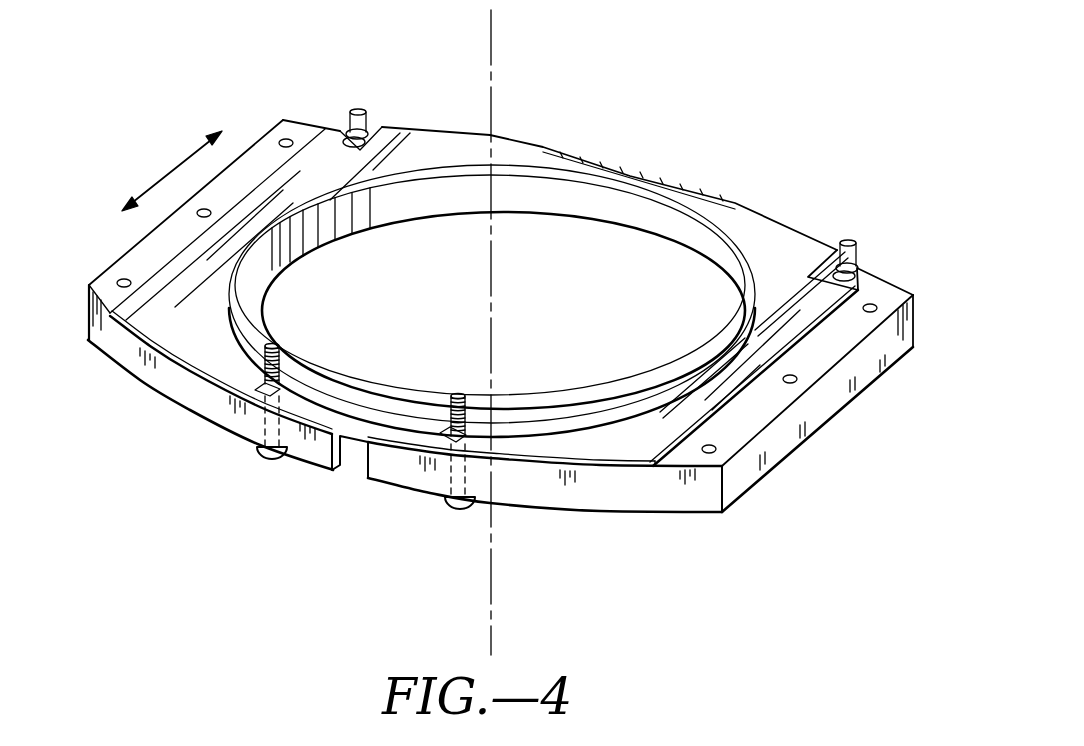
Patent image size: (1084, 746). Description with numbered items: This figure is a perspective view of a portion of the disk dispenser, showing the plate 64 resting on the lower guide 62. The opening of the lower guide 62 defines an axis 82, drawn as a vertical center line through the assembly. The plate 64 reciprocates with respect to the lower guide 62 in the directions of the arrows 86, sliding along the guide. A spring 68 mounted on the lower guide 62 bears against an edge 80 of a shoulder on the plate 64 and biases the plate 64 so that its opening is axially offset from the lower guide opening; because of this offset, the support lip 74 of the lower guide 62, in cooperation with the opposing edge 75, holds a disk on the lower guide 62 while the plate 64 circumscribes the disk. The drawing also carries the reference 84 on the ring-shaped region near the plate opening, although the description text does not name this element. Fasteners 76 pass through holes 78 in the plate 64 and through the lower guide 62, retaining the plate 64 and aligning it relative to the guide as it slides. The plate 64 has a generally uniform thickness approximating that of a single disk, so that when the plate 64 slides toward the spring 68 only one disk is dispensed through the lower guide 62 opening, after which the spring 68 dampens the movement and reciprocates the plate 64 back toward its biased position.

The lower guide 62 is at (778, 452).
The plate 64 is at (798, 311).
The spring 68 is at (354, 128).
The support lip 74 is at (620, 205).
The opposing edge 75 is at (383, 463).
The fasteners 76 is at (262, 433).
The holes 78 is at (440, 430).
The edge 80 is at (875, 276).
The axis 82 is at (498, 46).
The flange 84 is at (313, 400).
The arrows 86 is at (172, 170).